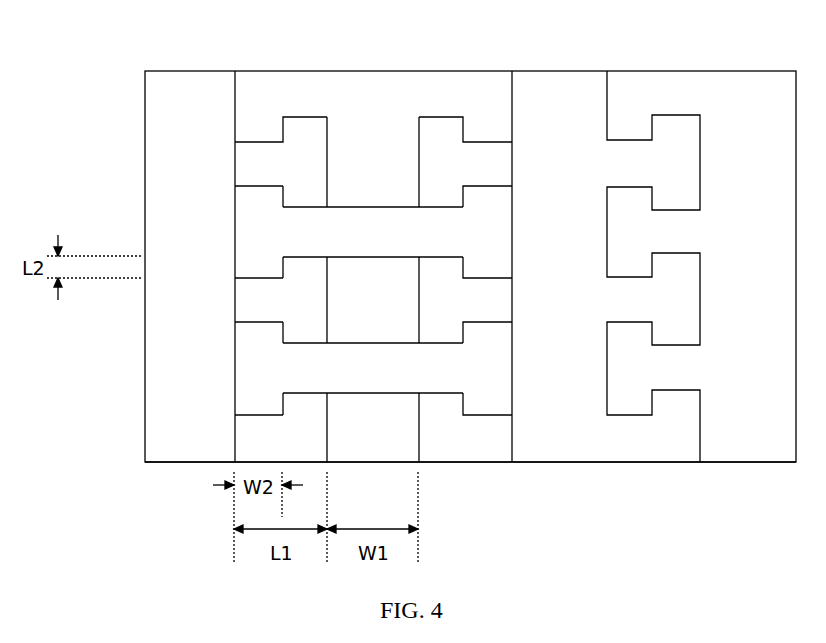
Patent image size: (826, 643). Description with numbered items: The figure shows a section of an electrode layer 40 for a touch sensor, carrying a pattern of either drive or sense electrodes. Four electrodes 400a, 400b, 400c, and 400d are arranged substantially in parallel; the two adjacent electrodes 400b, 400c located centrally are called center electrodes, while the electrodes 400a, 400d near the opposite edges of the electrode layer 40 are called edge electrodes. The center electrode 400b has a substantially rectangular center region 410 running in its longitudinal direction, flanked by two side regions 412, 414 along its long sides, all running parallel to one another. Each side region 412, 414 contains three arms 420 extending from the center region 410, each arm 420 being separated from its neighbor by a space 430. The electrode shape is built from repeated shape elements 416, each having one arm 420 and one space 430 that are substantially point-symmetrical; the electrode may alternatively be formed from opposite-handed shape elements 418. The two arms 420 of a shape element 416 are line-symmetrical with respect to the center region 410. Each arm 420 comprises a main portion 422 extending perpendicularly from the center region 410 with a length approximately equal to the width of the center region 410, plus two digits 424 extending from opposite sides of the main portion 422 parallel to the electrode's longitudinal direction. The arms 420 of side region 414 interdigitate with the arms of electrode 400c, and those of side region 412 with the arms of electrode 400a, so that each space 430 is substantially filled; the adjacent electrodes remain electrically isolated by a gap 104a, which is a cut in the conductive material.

The electrode layer 40 is at (128, 87).
The edge electrode 400a is at (180, 70).
The center electrode 400b is at (357, 70).
The center electrode 400c is at (550, 70).
The edge electrode 400d is at (713, 70).
The center region 410 is at (373, 97).
The side region 412 is at (290, 95).
The side region 414 is at (442, 97).
The shape element 416 is at (368, 207).
The shape element 418 is at (368, 393).
The arm 420 is at (256, 223).
The main portion 422 is at (258, 243).
The digit 424 is at (258, 199).
The space 430 is at (282, 302).
The gap 104a is at (420, 435).